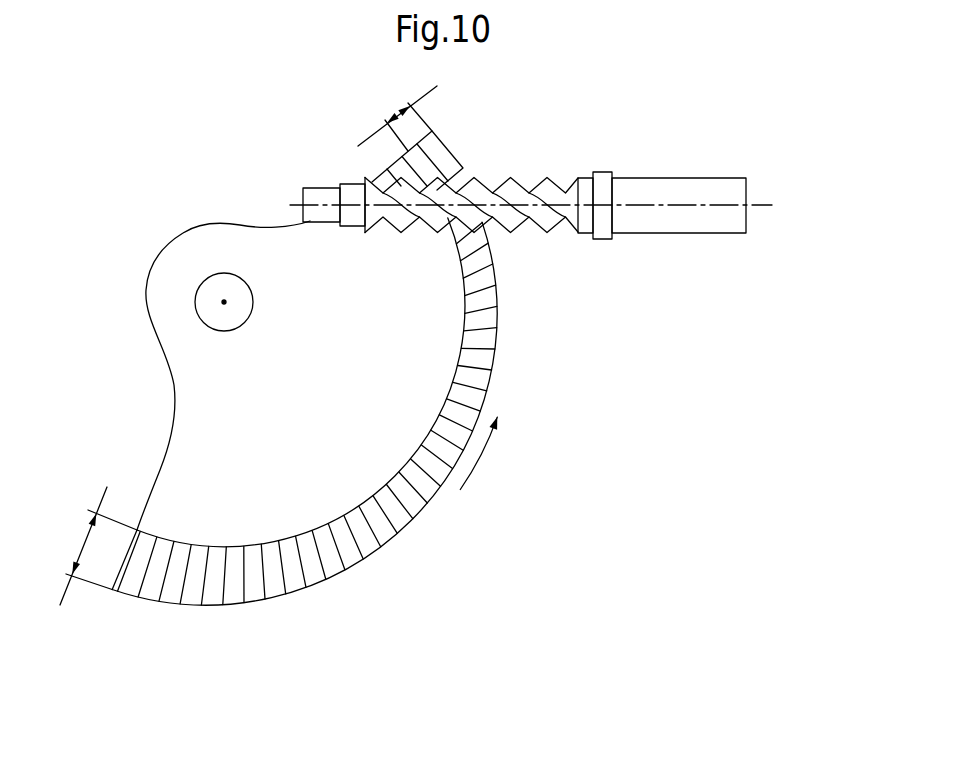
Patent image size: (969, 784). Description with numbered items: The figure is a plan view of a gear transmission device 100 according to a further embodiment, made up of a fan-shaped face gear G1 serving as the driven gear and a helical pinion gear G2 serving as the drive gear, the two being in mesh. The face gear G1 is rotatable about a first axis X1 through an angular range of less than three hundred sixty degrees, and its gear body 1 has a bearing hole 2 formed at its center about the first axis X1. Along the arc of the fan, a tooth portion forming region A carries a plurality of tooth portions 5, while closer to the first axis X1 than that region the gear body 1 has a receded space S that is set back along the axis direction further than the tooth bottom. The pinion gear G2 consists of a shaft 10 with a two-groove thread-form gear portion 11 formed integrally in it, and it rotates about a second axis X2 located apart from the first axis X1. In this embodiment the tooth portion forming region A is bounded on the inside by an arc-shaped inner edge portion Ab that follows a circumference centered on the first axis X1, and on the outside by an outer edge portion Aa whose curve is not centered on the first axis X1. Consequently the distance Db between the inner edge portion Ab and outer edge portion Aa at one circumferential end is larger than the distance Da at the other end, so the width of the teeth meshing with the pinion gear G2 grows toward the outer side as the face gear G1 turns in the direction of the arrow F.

The gear body 1 is at (195, 396).
The bearing hole 2 is at (200, 318).
The tooth portions 5 is at (358, 550).
The shaft 10 is at (524, 236).
The gear portion 11 is at (547, 221).
The gear transmission device 100 is at (431, 379).
The tooth portion forming region A is at (304, 455).
The outer edge portion Aa is at (242, 605).
The inner edge portion Ab is at (225, 545).
The distance Da is at (410, 135).
The distance Db is at (98, 546).
The arrow F is at (484, 453).
The face gear G1 is at (276, 441).
The pinion gear G2 is at (548, 183).
The receded space S is at (338, 454).
The first axis X1 is at (224, 302).
The second axis X2 is at (548, 208).